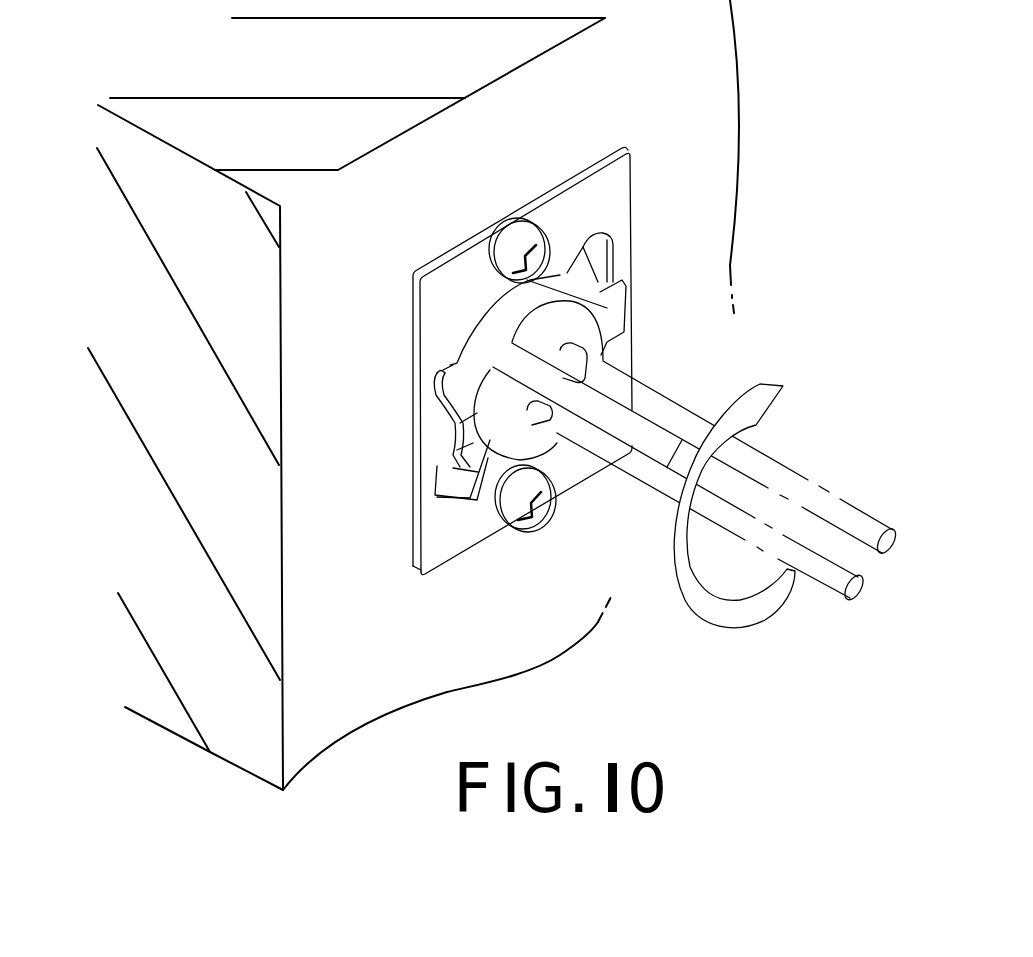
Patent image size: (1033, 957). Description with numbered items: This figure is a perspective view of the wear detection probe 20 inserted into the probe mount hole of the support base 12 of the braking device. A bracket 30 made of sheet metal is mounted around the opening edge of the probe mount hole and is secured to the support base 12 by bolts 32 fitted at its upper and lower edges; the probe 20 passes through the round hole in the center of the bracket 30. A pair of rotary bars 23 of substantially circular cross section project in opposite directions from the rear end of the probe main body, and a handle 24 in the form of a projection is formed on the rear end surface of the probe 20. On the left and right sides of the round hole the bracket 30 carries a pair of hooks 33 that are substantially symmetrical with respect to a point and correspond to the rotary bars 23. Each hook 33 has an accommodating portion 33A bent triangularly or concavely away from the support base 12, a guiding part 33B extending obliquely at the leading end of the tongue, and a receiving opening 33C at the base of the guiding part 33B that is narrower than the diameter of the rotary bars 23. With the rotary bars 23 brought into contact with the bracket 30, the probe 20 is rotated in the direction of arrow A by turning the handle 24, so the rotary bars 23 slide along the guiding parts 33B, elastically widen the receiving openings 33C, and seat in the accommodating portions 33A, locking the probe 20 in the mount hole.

The support base 12 is at (705, 107).
The bracket 30 is at (634, 157).
The bolt 32 is at (533, 220).
The rotary bar 23 is at (593, 257).
The hook 33 is at (482, 400).
The accommodating portion 33A is at (443, 413).
The guiding part 33B is at (443, 482).
The receiving opening 33C is at (452, 447).
The handle 24 is at (620, 424).
The wear detection probe 20 is at (651, 463).
The direction of arrow A is at (735, 628).